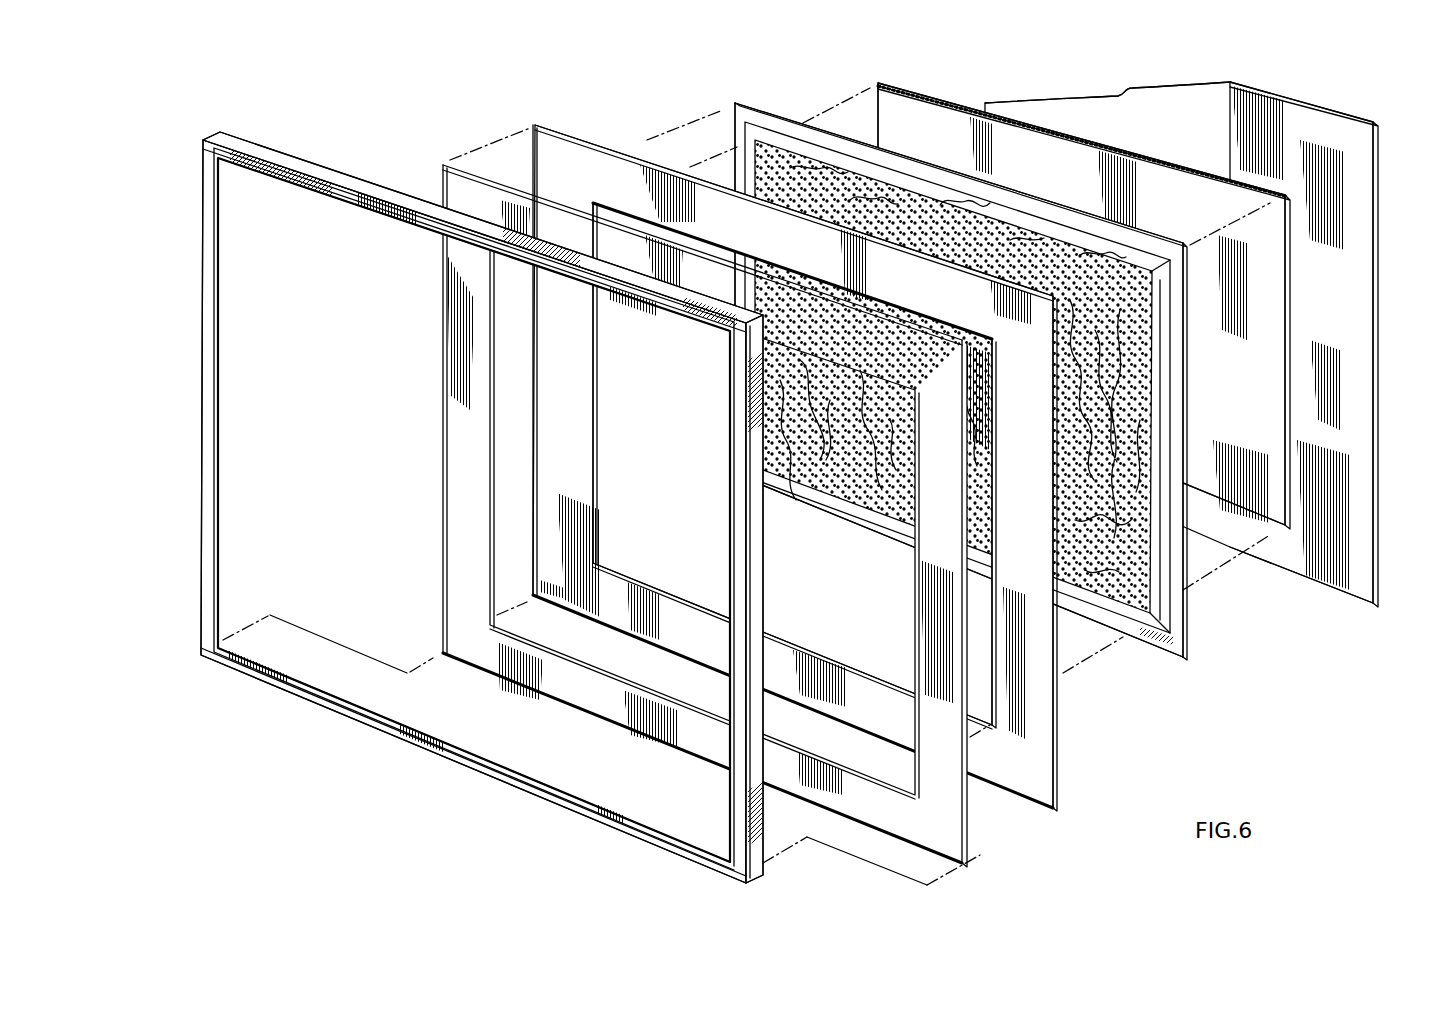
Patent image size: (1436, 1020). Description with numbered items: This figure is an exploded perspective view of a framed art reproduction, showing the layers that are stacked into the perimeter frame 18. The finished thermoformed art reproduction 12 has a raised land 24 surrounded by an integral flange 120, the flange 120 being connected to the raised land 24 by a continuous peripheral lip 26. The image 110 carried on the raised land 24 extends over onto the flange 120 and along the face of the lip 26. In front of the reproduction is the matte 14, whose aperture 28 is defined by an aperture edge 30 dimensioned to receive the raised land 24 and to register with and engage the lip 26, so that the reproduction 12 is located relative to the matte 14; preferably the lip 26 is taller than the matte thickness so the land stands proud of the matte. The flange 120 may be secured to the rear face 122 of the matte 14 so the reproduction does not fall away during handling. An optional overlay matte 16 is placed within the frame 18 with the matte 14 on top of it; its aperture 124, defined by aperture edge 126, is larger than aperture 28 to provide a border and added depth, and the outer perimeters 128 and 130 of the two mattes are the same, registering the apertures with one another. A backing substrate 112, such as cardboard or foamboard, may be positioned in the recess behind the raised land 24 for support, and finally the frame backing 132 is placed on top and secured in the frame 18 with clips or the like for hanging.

The art reproduction 12 is at (972, 361).
The matte 14 is at (748, 447).
The overlay matte 16 is at (732, 481).
The perimeter frame 18 is at (210, 445).
The raised land 24 is at (1020, 220).
The continuous lip 26 is at (947, 190).
The aperture 28 is at (683, 466).
The aperture edge 30 is at (593, 490).
The image 110 is at (1160, 430).
The backing substrate 112 is at (1153, 183).
The flange 120 is at (900, 167).
The rear face 122 is at (1057, 707).
The aperture 124 is at (560, 555).
The aperture edge 126 is at (547, 637).
The outer perimeter 128 is at (582, 138).
The outer perimeter 130 is at (468, 192).
The frame backing 132 is at (1353, 200).